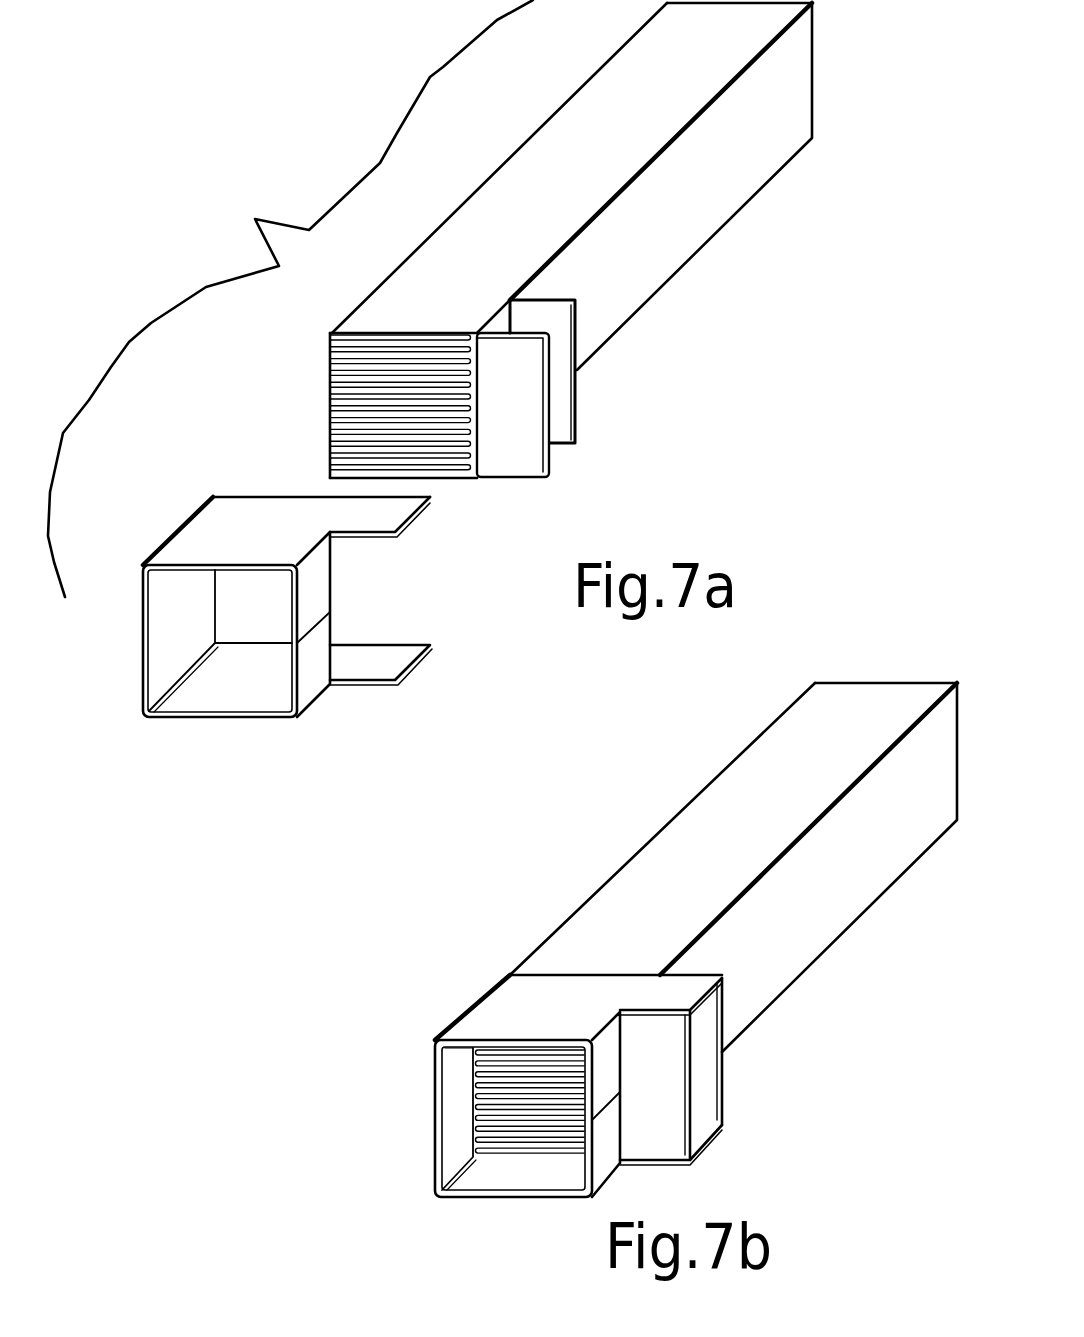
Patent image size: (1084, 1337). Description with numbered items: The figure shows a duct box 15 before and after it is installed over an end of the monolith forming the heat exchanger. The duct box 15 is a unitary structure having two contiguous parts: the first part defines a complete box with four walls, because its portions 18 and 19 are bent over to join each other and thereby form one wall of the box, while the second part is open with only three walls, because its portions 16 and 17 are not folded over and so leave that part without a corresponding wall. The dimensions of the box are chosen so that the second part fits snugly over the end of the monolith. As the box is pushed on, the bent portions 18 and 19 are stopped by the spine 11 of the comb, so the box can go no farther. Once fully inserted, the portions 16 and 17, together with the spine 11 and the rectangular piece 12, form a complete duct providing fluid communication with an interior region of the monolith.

The spine of the comb 11 is at (507, 474).
The rectangular piece 12 is at (568, 402).
The duct box 15 is at (233, 514).
The portion 16 is at (400, 514).
The portion 17 is at (388, 667).
The bent portion 18 is at (308, 595).
The bent portion 19 is at (302, 670).